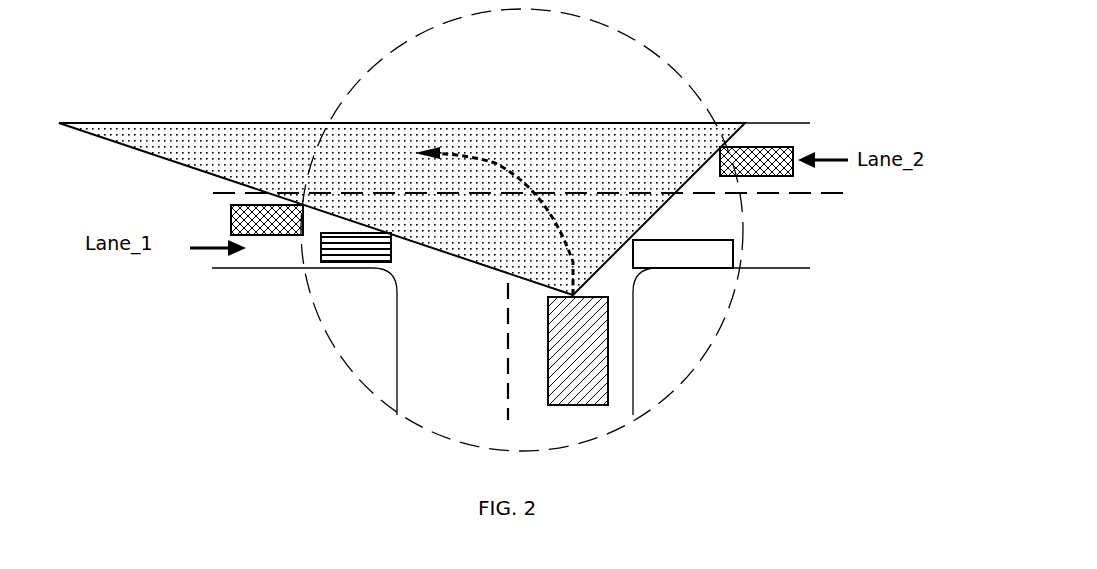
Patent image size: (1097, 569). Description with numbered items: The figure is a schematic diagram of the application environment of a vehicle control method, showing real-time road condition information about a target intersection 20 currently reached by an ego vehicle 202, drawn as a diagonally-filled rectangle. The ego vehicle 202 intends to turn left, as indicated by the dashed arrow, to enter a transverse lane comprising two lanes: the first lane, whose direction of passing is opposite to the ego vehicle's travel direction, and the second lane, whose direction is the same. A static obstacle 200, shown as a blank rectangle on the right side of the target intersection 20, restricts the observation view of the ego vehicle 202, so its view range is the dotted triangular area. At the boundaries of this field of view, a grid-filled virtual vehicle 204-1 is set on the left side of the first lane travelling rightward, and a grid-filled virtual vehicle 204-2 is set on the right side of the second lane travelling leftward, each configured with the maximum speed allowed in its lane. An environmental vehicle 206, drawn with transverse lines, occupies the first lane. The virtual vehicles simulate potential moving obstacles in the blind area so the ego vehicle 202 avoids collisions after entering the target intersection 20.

The target intersection 20 is at (663, 58).
The virtual vehicle 204-2 is at (802, 125).
The virtual vehicle 204-1 is at (266, 236).
The environmental vehicle 206 is at (343, 263).
The static obstacle 200 is at (735, 257).
The ego vehicle 202 is at (608, 350).